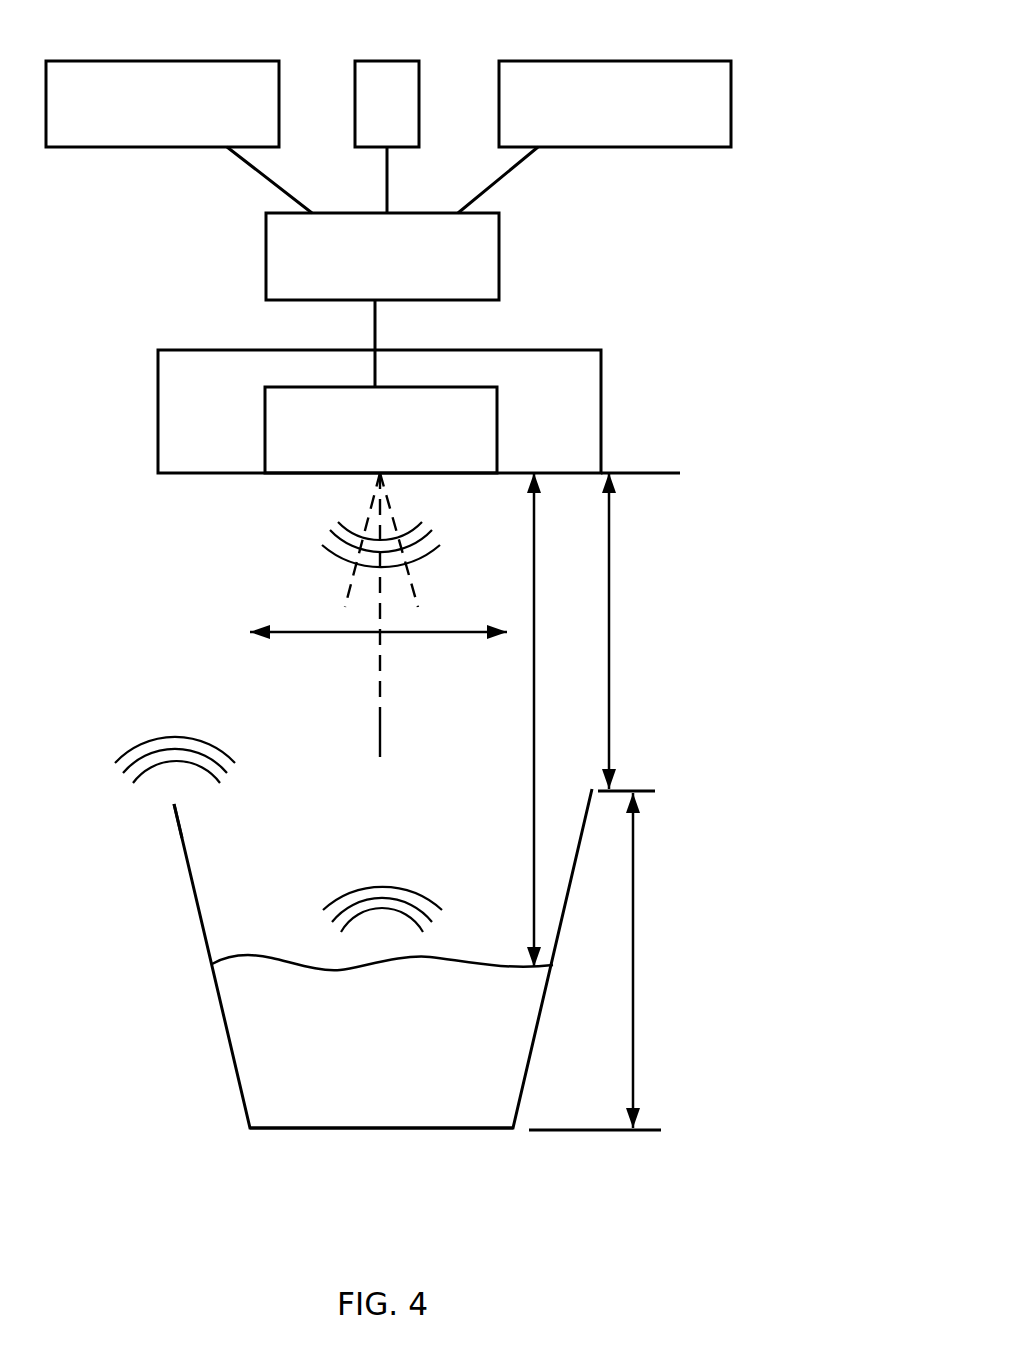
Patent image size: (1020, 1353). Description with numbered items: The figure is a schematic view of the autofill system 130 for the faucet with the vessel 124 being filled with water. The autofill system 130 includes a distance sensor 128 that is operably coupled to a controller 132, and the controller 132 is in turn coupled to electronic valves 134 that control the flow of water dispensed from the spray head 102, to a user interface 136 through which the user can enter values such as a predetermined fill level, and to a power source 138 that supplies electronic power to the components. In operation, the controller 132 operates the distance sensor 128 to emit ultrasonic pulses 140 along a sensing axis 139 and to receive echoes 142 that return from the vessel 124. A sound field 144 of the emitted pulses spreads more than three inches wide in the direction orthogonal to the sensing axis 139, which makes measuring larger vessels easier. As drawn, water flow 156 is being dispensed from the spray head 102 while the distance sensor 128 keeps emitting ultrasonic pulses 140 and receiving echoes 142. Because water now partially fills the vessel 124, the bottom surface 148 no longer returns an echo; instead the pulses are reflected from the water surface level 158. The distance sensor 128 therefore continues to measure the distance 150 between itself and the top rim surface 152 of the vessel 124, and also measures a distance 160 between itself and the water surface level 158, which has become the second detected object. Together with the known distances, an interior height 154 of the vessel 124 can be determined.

The autofill system 130 is at (718, 297).
The controller 132 is at (266, 263).
The electronic valves 134 is at (138, 61).
The user interface 136 is at (614, 61).
The power source 138 is at (390, 61).
The spray head 102 is at (158, 385).
The distance sensor 128 is at (265, 432).
The water flow 156 is at (373, 498).
The sensing axis 139 is at (382, 715).
The ultrasonic pulses 140 is at (433, 555).
The sound field 144 is at (290, 632).
The echoes 142 is at (143, 740).
The distance to top rim surface 150 is at (610, 613).
The distance to water surface level 160 is at (533, 841).
The interior height 154 is at (636, 853).
The vessel 124 is at (200, 917).
The top rim surface 152 is at (174, 804).
The bottom surface 148 is at (277, 1127).
The water surface level 158 is at (320, 970).